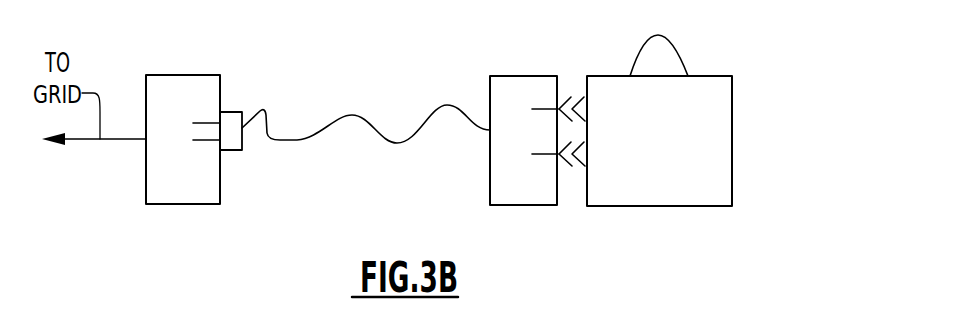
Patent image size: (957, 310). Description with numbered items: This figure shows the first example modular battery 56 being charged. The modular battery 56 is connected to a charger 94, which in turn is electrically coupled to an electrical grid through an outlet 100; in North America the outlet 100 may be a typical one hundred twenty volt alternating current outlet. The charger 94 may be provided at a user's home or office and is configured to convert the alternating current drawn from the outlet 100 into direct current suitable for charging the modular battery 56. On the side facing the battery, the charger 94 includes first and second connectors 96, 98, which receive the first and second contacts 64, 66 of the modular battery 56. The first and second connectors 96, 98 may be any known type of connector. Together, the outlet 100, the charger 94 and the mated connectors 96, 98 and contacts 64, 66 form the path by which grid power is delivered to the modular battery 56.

The outlet 100 is at (185, 75).
The charger 94 is at (542, 76).
The first connector 96 is at (560, 102).
The second connector 98 is at (567, 167).
The first contact 64 is at (582, 94).
The second contact 66 is at (582, 167).
The modular battery 56 is at (740, 118).